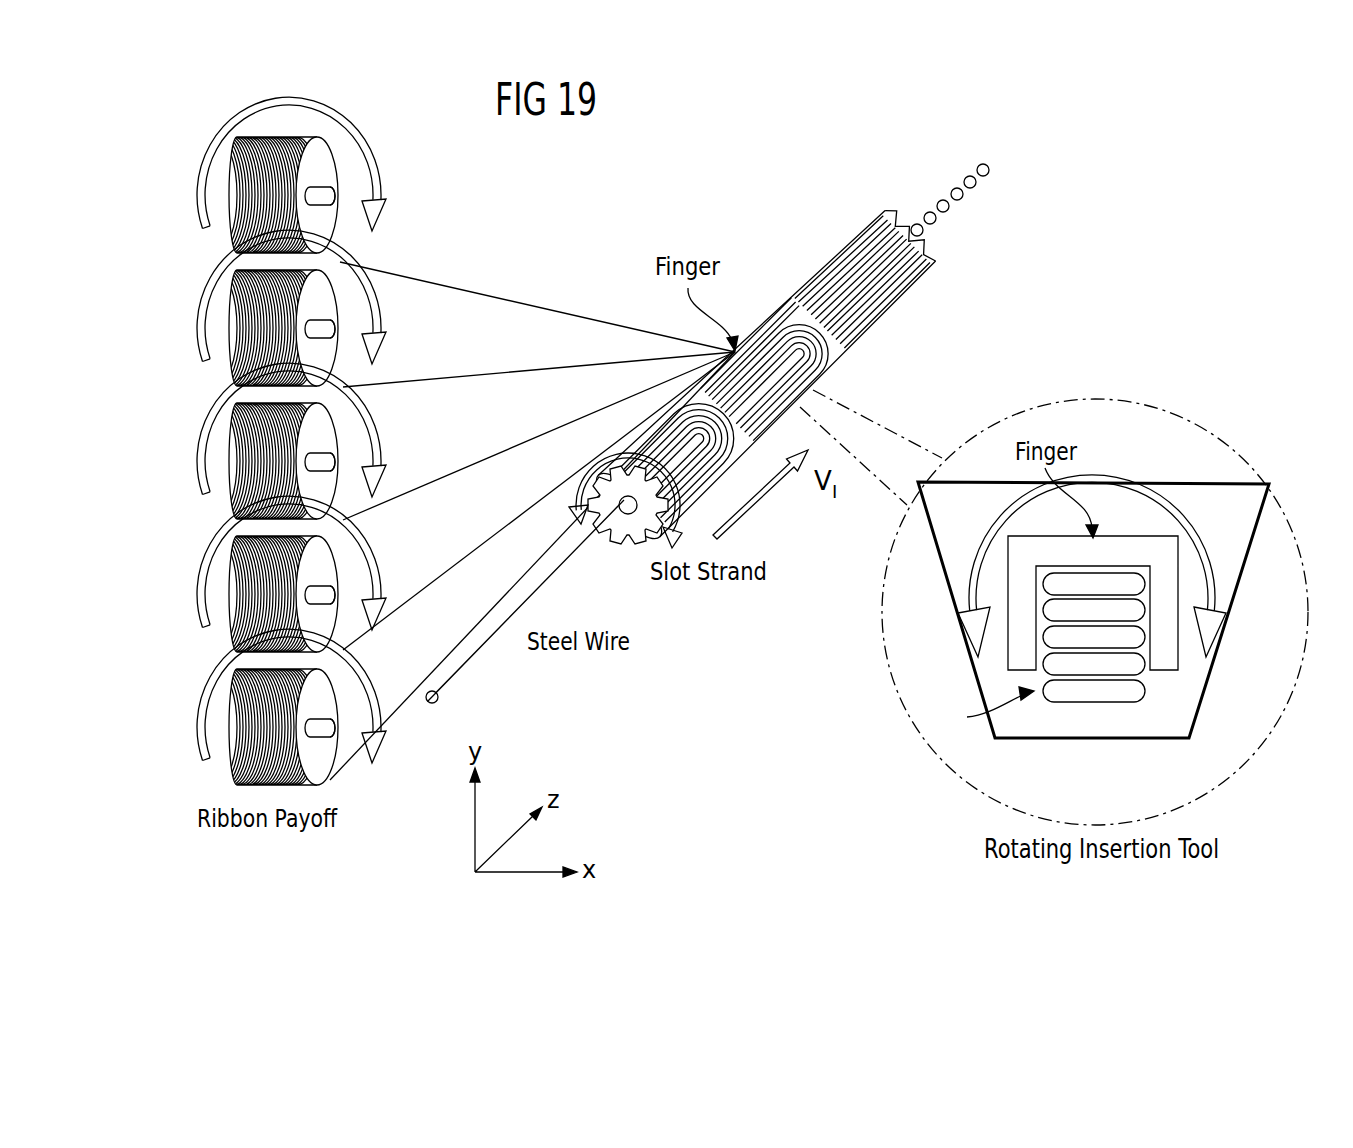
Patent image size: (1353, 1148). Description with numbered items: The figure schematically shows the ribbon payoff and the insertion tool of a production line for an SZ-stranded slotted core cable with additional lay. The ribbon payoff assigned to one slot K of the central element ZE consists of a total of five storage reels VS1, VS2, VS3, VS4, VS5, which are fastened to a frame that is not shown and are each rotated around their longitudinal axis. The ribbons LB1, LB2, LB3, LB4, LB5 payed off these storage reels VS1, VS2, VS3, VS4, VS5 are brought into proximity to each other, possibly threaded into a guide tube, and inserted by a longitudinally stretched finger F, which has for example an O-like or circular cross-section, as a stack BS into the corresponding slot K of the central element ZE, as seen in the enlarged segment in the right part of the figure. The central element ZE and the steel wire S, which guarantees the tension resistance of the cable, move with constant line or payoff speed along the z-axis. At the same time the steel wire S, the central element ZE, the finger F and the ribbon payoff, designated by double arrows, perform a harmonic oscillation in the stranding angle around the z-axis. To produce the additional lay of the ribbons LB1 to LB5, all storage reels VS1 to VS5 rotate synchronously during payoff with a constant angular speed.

The storage reel VS1 is at (233, 687).
The storage reel VS2 is at (233, 554).
The storage reel VS3 is at (233, 421).
The storage reel VS4 is at (233, 288).
The storage reel VS5 is at (233, 155).
The ribbon LB1 is at (478, 620).
The ribbon LB2 is at (478, 542).
The ribbon LB3 is at (488, 458).
The ribbon LB4 is at (468, 378).
The ribbon LB5 is at (476, 292).
The central element ZE is at (870, 232).
The steel wire S is at (480, 656).
The slot K is at (1226, 547).
The finger F is at (1167, 651).
The stack BS is at (983, 710).